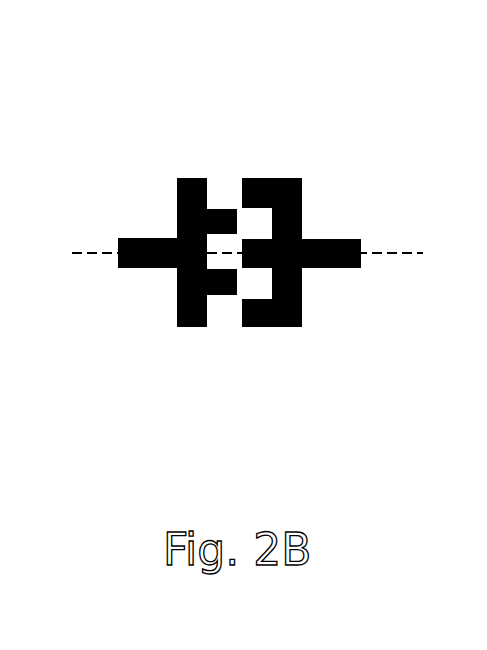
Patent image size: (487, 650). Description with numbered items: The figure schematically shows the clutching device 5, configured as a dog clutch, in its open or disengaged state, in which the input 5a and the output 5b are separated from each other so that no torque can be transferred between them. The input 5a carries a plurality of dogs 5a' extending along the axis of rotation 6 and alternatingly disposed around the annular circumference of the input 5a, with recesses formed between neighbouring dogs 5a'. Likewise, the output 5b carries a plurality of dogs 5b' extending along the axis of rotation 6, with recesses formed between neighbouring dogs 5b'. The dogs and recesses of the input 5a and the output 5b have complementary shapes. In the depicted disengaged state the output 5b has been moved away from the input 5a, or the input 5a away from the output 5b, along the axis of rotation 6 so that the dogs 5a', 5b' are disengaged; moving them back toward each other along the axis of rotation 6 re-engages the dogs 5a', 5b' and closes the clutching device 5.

The clutching device 5 is at (369, 176).
The input 5a is at (165, 202).
The dogs 5a' is at (229, 179).
The output 5b is at (282, 310).
The dogs 5b' is at (227, 310).
The axis of rotation 6 is at (393, 255).